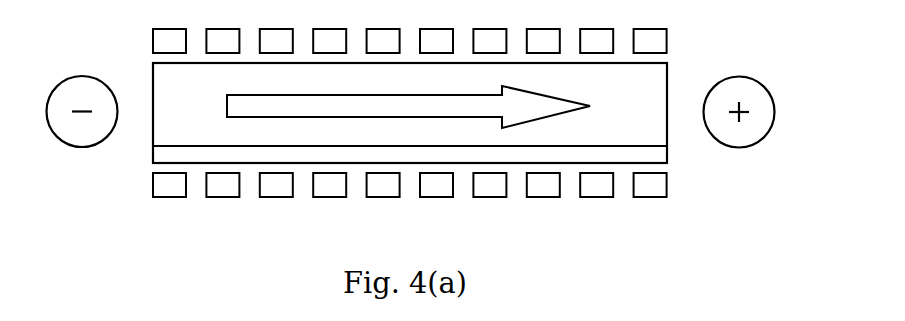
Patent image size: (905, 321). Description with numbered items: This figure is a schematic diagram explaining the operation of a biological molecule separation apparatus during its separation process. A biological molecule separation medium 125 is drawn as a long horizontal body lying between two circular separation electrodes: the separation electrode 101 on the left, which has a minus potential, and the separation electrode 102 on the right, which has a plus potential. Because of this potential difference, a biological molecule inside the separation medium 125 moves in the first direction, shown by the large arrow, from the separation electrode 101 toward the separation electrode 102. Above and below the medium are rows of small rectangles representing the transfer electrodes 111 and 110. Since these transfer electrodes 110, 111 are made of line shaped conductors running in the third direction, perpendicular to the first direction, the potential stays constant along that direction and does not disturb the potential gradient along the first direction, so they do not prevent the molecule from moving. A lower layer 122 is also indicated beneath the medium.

The separation electrode 101 is at (83, 147).
The separation electrode 102 is at (738, 148).
The transfer electrode 110 is at (598, 200).
The transfer electrode 111 is at (678, 40).
The lower layer 122 is at (407, 155).
The biological molecule separation medium 125 is at (165, 79).